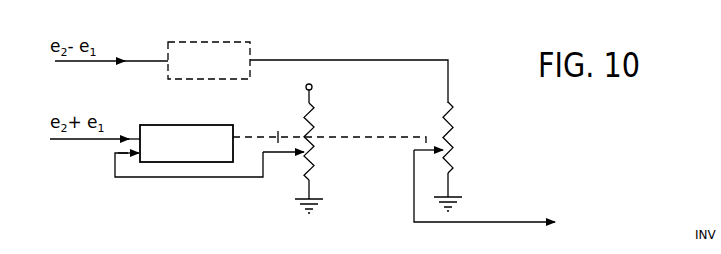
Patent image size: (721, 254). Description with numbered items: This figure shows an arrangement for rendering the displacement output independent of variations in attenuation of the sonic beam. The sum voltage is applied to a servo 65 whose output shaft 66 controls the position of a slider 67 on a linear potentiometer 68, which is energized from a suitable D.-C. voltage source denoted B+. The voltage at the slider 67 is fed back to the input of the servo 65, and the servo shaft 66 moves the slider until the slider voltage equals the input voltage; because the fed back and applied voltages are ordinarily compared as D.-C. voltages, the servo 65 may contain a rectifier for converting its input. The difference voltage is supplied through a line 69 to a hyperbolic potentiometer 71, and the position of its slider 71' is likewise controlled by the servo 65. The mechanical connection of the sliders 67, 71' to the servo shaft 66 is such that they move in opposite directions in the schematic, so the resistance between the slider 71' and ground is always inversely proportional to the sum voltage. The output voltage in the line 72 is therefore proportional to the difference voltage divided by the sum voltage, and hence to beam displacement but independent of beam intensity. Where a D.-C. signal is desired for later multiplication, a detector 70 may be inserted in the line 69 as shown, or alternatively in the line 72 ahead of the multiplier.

The servo 65 is at (200, 108).
The servo output shaft 66 is at (253, 137).
The slider 67 is at (286, 157).
The linear potentiometer 68 is at (316, 126).
The line 69 is at (339, 44).
The detector 70 is at (198, 42).
The hyperbolic potentiometer 71 is at (491, 156).
The slider 71' is at (428, 168).
The output line 72 is at (499, 223).